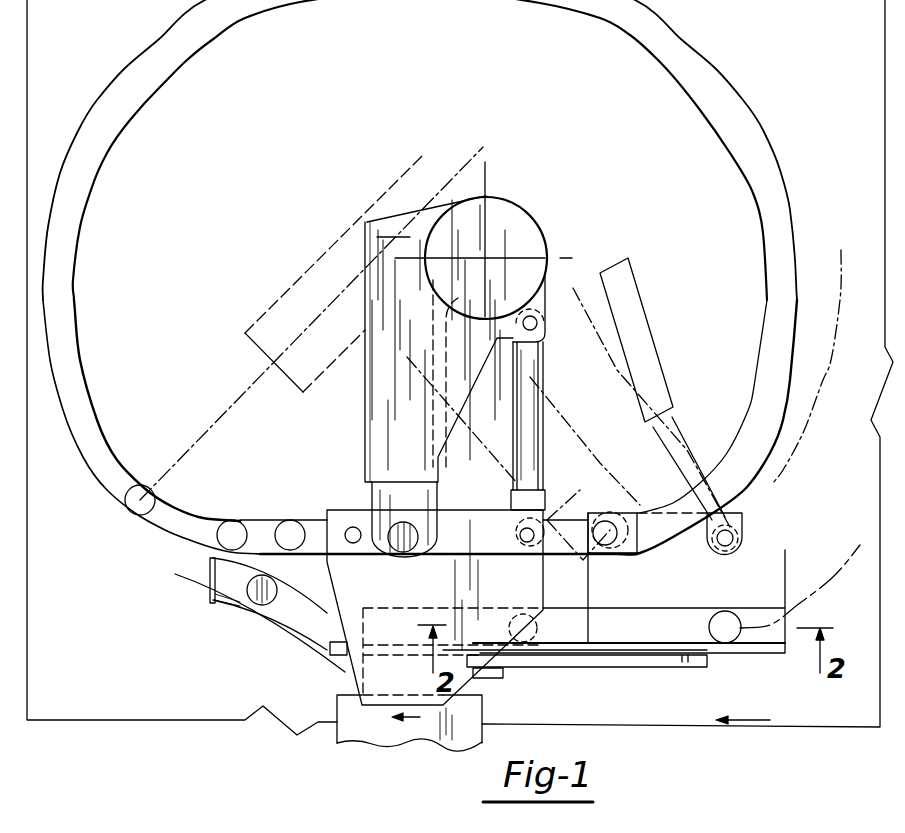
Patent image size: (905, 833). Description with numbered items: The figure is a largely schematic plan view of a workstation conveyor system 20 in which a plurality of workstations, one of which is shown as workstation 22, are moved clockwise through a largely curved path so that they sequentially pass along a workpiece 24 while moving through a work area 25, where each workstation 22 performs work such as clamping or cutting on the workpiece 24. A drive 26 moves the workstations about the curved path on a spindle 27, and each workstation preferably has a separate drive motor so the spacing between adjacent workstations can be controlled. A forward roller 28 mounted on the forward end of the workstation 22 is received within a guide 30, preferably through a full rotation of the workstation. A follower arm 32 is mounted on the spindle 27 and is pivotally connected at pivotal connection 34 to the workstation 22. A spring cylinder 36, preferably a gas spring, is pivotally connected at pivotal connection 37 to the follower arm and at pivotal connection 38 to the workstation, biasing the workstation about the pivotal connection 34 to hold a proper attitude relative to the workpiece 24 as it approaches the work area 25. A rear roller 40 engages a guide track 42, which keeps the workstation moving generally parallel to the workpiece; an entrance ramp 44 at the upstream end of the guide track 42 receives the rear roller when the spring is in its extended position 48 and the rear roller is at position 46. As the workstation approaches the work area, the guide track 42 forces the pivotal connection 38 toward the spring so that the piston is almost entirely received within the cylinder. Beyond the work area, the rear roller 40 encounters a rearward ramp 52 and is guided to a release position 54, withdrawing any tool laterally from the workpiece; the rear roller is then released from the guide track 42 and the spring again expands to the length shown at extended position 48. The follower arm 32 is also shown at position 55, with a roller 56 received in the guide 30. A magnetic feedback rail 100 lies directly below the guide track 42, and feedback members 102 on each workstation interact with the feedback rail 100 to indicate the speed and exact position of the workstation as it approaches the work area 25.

The workstation conveyor system 20 is at (766, 122).
The workstation 22 is at (300, 653).
The workpiece 24 is at (420, 718).
The work area 25 is at (375, 741).
The drive 26 is at (549, 233).
The spindle 27 is at (497, 218).
The forward roller 28 is at (354, 527).
The guide 30 is at (164, 538).
The follower arm 32 is at (370, 433).
The pivotal connection 34 is at (400, 552).
The spring cylinder 36 is at (544, 365).
The pivotal connection 37 is at (540, 316).
The pivotal connection 38 is at (522, 543).
The rear roller 40 is at (526, 631).
The guide track 42 is at (618, 609).
The entrance ramp 44 is at (762, 565).
The rear roller position 46 is at (735, 591).
The extended position 48 is at (628, 359).
The rearward ramp 52 is at (255, 618).
The release position 54 is at (210, 571).
The follower arm position 55 is at (290, 304).
The roller 56 is at (124, 492).
The magnetic feedback rail 100 is at (653, 668).
The feedback member 102 is at (492, 680).